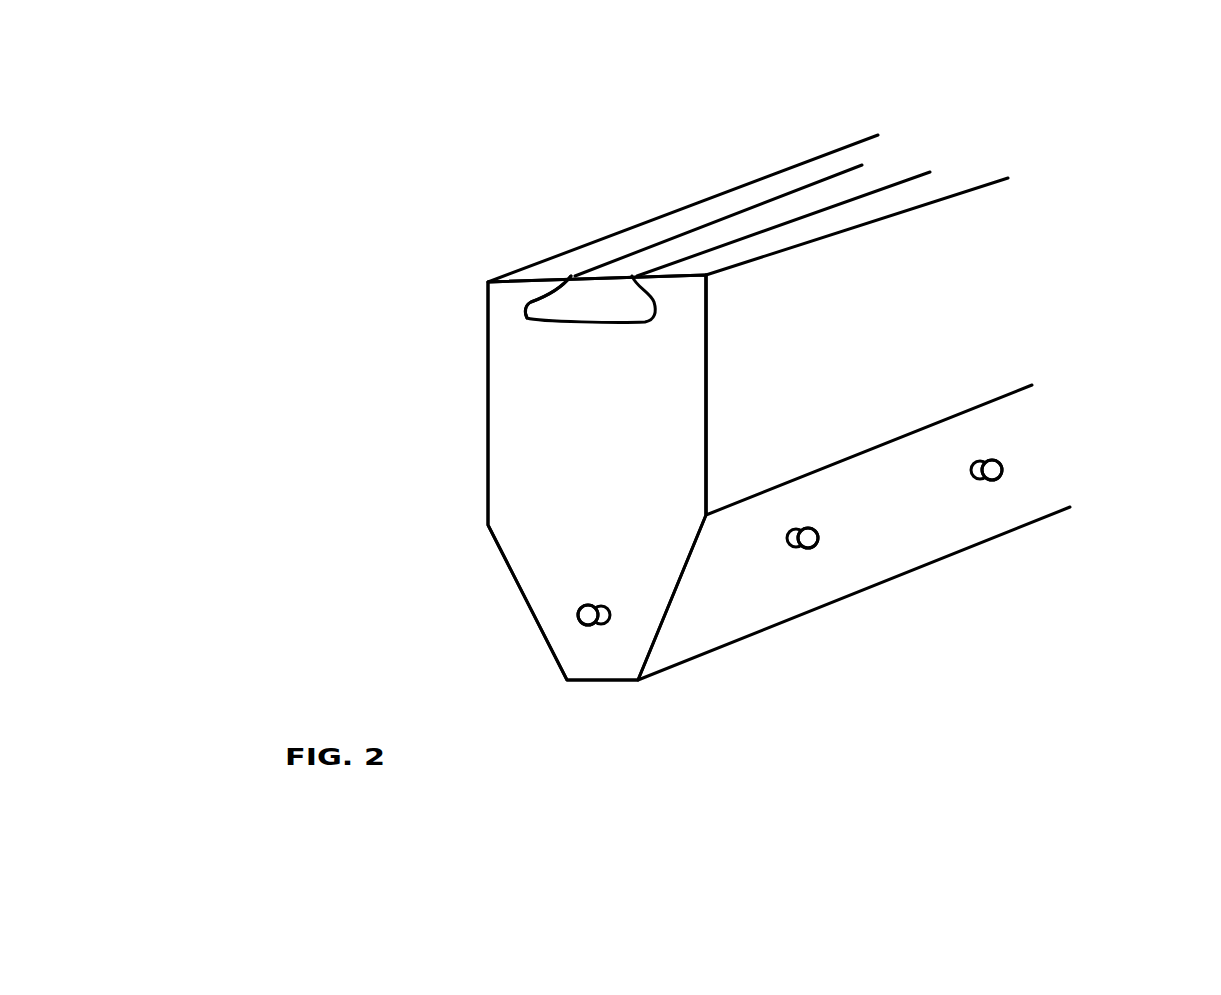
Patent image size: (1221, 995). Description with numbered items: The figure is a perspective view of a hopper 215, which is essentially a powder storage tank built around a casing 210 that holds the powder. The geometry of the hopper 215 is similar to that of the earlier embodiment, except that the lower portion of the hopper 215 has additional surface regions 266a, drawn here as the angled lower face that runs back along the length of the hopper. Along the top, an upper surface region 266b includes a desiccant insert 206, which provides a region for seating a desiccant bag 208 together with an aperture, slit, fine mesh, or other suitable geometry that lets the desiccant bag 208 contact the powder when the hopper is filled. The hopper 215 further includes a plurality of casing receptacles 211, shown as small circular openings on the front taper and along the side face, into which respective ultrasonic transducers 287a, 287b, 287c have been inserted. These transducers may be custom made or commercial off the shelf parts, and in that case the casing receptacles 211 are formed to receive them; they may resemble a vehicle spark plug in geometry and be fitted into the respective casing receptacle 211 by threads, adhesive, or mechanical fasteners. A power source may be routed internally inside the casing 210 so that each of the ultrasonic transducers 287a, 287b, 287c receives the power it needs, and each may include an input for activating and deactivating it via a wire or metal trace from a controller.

The hopper 215 is at (290, 202).
The desiccant bag 208 is at (648, 240).
The desiccant insert 206 is at (565, 302).
The casing 210 is at (533, 470).
The casing receptacle 211 is at (1085, 415).
The upper surface region 266b is at (927, 195).
The surface region 266a is at (843, 537).
The ultrasonic transducer 287a is at (992, 493).
The ultrasonic transducer 287b is at (805, 560).
The ultrasonic transducer 287c is at (593, 640).